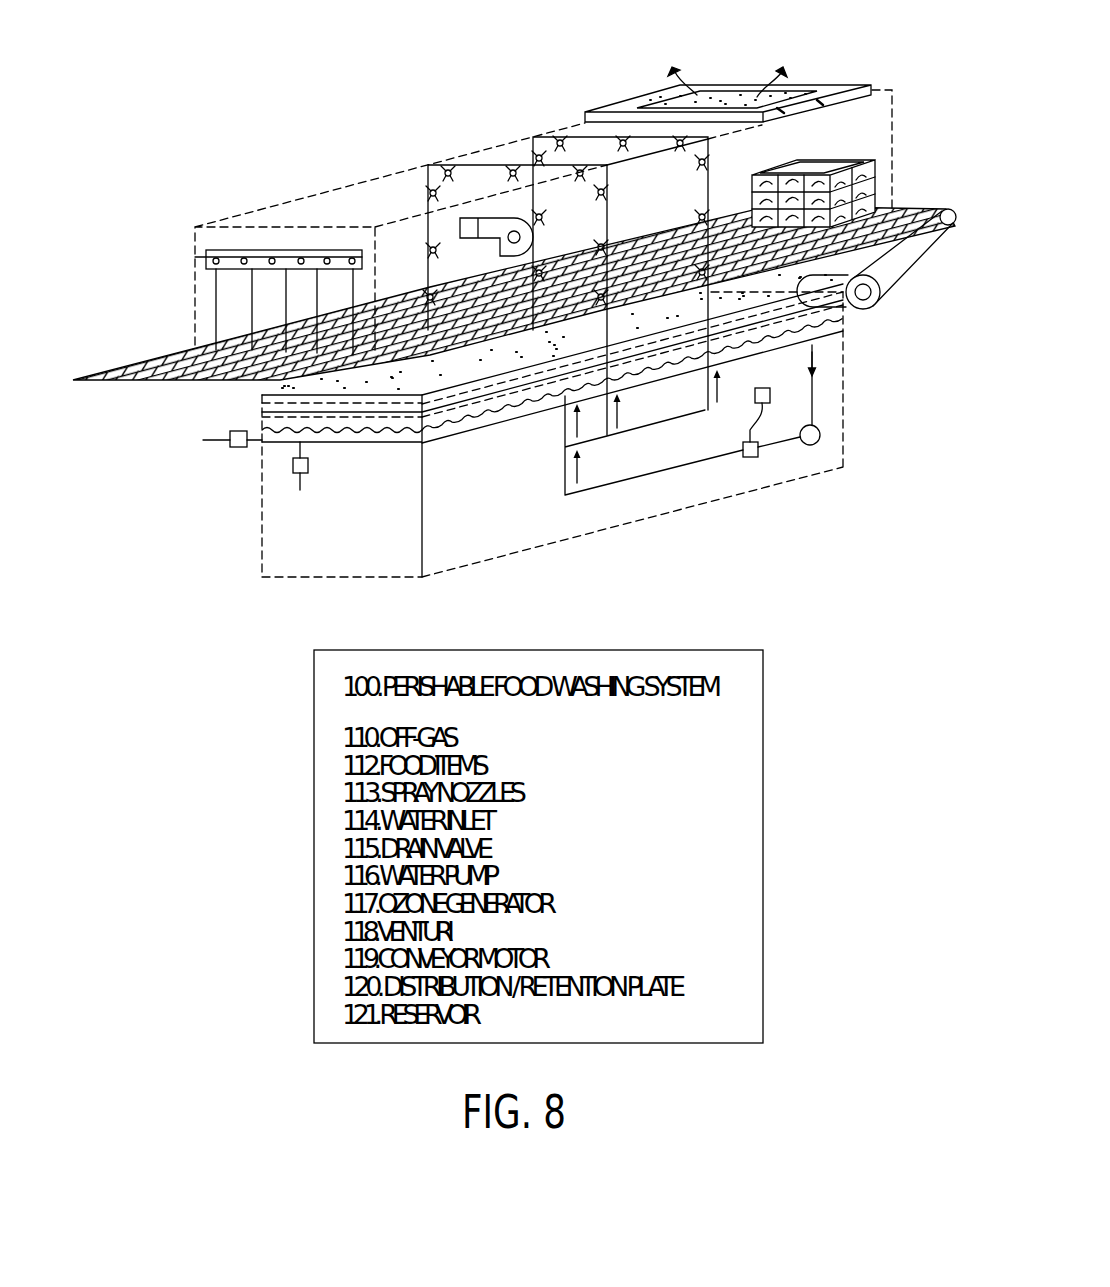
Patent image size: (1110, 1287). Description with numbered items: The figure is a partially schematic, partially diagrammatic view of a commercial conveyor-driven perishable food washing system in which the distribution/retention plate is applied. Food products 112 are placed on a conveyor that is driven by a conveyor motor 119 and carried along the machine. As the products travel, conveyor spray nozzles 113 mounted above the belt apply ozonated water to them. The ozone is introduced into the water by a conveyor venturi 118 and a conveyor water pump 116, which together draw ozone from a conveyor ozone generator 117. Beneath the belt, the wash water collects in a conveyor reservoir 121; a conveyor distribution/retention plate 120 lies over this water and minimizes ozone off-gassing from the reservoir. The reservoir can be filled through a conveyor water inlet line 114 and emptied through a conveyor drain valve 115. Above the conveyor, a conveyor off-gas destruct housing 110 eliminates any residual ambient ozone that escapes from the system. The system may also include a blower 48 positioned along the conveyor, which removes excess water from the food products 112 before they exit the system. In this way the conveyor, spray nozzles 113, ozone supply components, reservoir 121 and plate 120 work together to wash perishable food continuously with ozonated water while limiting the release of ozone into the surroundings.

The blower 48 is at (502, 220).
The conveyor off-gas destruct housing 110 is at (722, 83).
The food products 112 is at (840, 160).
The conveyor spray nozzles 113 is at (536, 146).
The conveyor water inlet line 114 is at (238, 447).
The conveyor drain valve 115 is at (308, 466).
The conveyor water pump 116 is at (813, 445).
The conveyor ozone generator 117 is at (770, 393).
The conveyor venturi 118 is at (753, 457).
The conveyor motor 119 is at (865, 309).
The conveyor distribution/retention plate 120 is at (470, 432).
The conveyor reservoir 121 is at (298, 441).